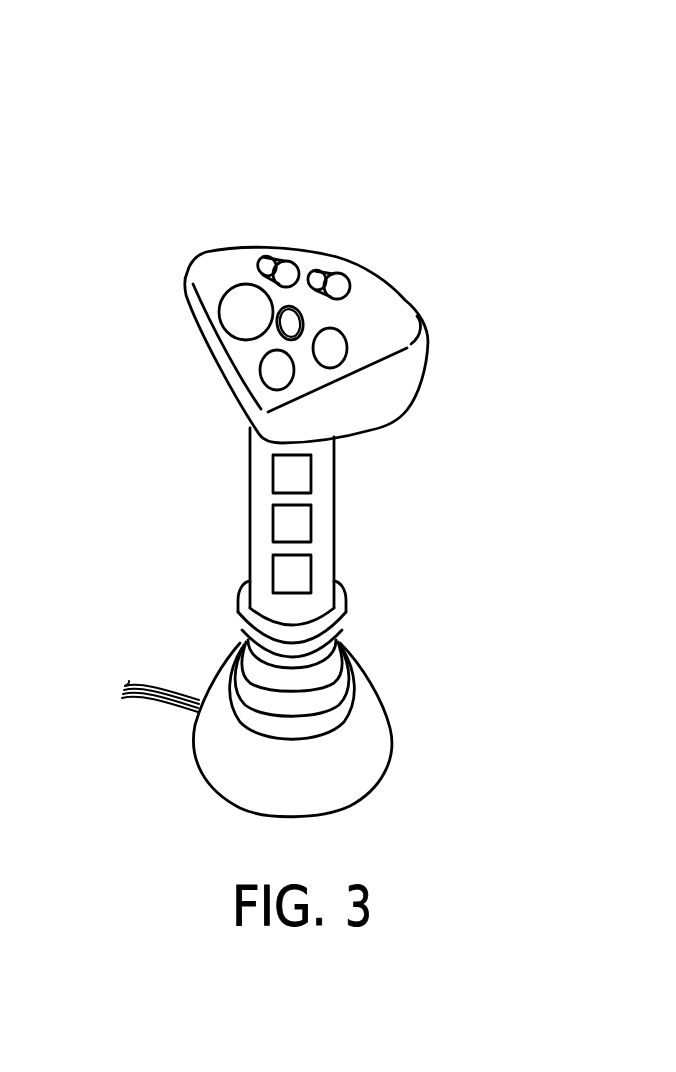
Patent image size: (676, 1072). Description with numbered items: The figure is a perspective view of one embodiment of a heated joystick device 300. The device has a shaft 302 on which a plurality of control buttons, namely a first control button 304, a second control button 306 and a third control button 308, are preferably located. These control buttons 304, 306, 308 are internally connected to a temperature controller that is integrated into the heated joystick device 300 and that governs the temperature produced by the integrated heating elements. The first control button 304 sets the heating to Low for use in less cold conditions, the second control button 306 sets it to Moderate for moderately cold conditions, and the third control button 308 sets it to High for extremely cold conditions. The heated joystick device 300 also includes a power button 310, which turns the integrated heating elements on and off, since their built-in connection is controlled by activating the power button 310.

The heated joystick device 300 is at (178, 160).
The shaft 302 is at (333, 568).
The first control button 304 is at (287, 462).
The second control button 306 is at (283, 515).
The third control button 308 is at (282, 560).
The power button 310 is at (294, 305).